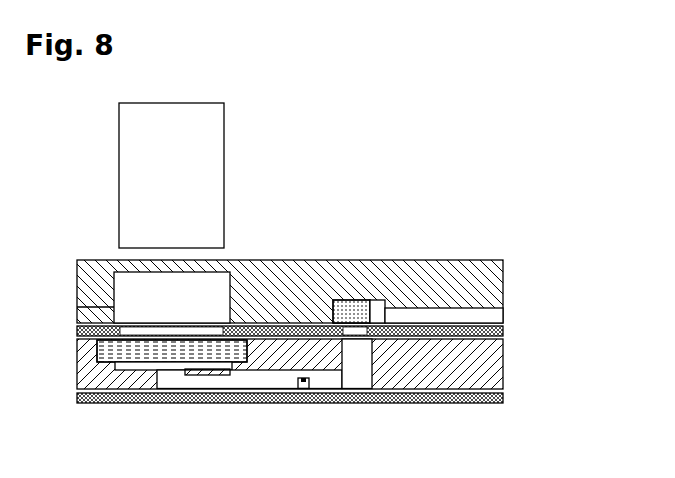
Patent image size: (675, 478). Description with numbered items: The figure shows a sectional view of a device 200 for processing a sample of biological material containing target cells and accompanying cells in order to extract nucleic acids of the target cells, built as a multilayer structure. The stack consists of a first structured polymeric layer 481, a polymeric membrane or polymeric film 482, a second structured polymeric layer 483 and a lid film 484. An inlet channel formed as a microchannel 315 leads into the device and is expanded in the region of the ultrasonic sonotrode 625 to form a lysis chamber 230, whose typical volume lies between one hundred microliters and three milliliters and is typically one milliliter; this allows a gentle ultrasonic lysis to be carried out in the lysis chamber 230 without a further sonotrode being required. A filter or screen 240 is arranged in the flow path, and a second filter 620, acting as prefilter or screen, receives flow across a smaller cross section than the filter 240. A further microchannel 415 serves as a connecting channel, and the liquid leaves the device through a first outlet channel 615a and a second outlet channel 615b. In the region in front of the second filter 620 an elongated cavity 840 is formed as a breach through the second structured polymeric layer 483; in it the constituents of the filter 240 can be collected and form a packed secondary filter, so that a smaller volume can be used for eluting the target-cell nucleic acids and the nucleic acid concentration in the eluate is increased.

The device 200 is at (556, 128).
The ultrasonic sonotrode 625 is at (214, 155).
The lysis chamber 230 is at (208, 292).
The microchannel 315 is at (96, 312).
The filter 240 is at (356, 301).
The second outlet channel 615b is at (452, 316).
The first structured polymeric layer 481 is at (331, 259).
The polymeric film 482 is at (504, 335).
The second structured polymeric layer 483 is at (333, 399).
The lid film 484 is at (505, 398).
The second filter 620 is at (135, 350).
The further microchannel 415 is at (224, 378).
The first outlet channel 615a is at (303, 386).
The elongated cavity 840 is at (360, 355).